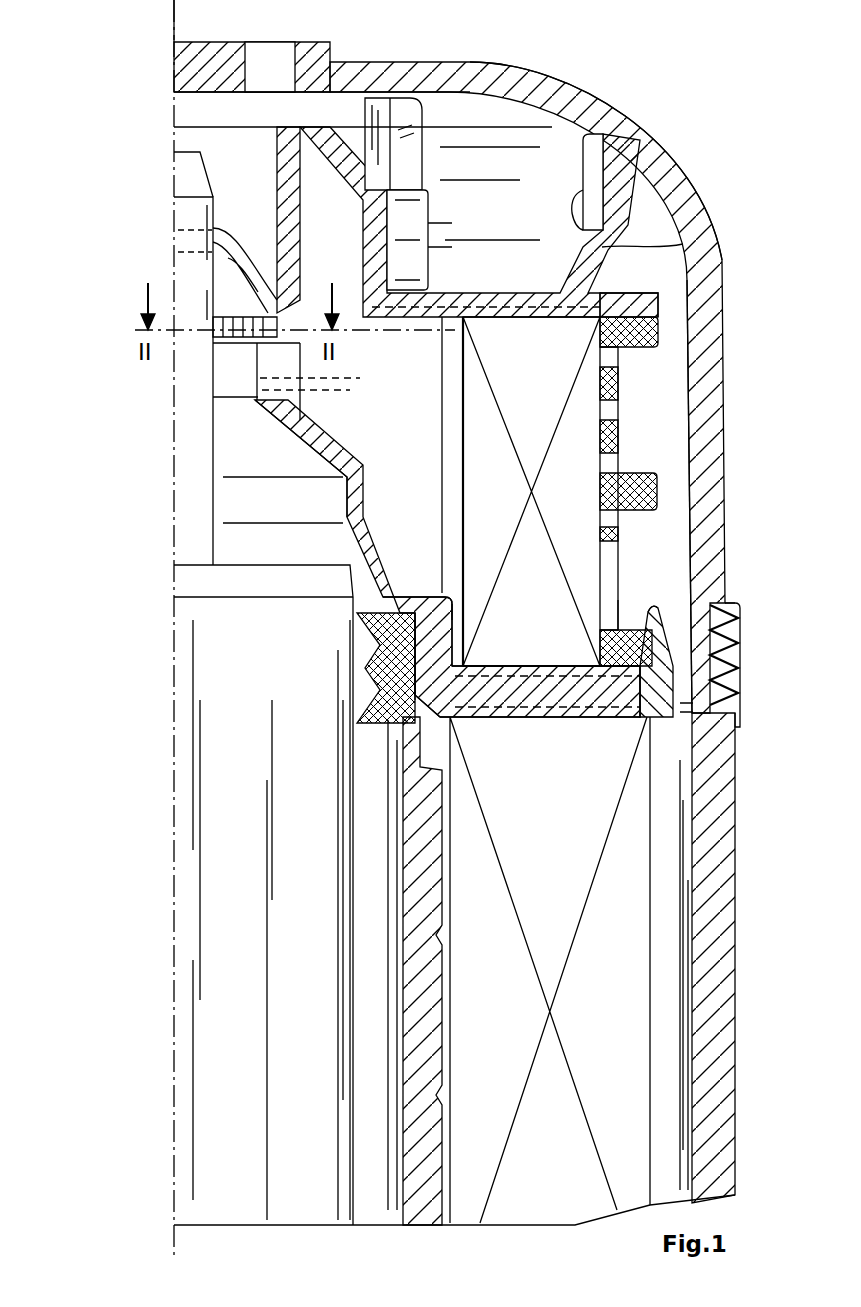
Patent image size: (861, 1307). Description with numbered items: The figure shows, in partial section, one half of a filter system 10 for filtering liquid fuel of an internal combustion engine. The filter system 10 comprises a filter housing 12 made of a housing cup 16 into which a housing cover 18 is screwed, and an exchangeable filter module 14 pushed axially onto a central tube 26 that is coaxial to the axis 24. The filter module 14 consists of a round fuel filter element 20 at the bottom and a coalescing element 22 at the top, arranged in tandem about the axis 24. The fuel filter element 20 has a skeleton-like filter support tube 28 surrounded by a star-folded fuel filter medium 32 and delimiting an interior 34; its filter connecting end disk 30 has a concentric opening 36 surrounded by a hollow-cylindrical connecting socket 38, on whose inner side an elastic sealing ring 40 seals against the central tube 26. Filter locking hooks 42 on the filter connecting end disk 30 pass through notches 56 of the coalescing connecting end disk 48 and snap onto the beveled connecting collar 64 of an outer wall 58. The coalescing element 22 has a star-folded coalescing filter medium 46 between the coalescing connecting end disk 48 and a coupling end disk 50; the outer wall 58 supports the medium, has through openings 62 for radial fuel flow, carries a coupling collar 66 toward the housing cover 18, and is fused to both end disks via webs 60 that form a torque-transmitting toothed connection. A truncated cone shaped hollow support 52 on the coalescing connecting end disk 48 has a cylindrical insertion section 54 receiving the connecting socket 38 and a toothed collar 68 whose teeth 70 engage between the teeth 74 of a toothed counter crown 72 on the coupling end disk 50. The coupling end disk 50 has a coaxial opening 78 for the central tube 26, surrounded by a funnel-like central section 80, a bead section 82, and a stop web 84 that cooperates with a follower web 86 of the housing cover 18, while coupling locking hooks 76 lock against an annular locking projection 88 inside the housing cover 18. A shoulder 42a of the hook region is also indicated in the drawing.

The filter system 10 is at (140, 130).
The filter housing 12 is at (746, 856).
The filter module 14 is at (660, 525).
The housing cup 16 is at (718, 1110).
The housing cover 18 is at (680, 170).
The fuel filter element 20 is at (660, 1026).
The coalescing element 22 is at (632, 435).
The axis 24 is at (174, 28).
The central tube 26 is at (192, 870).
The filter support tube 28 is at (420, 1210).
The filter connecting end disk 30 is at (520, 705).
The fuel filter medium 32 is at (520, 1200).
The interior 34 is at (384, 1210).
The opening 36 is at (410, 692).
The connecting socket 38 is at (455, 644).
The elastic sealing ring 40 is at (358, 648).
The filter locking hook 42 is at (694, 654).
The cap shoulder 42a is at (662, 614).
The coalescing filter medium 46 is at (546, 408).
The coalescing connecting end disk 48 is at (535, 672).
The coupling end disk 50 is at (479, 245).
The truncated cone shaped hollow support 52 is at (264, 405).
The cylindrical insertion section 54 is at (452, 614).
The notch 56 is at (648, 680).
The outer wall 58 is at (622, 388).
The web 60 is at (622, 300).
The through opening 62 is at (620, 462).
The connecting collar 64 is at (626, 632).
The coupling collar 66 is at (662, 332).
The toothed collar 68 is at (298, 396).
The teeth 70 is at (300, 410).
The toothed counter crown 72 is at (222, 333).
The teeth 74 is at (302, 378).
The coupling locking hook 76 is at (584, 195).
The opening 78 is at (214, 226).
The central section 80 is at (232, 272).
The bead section 82 is at (285, 166).
The stop web 84 is at (432, 203).
The follower web 86 is at (405, 114).
The annular locking projection 88 is at (700, 243).